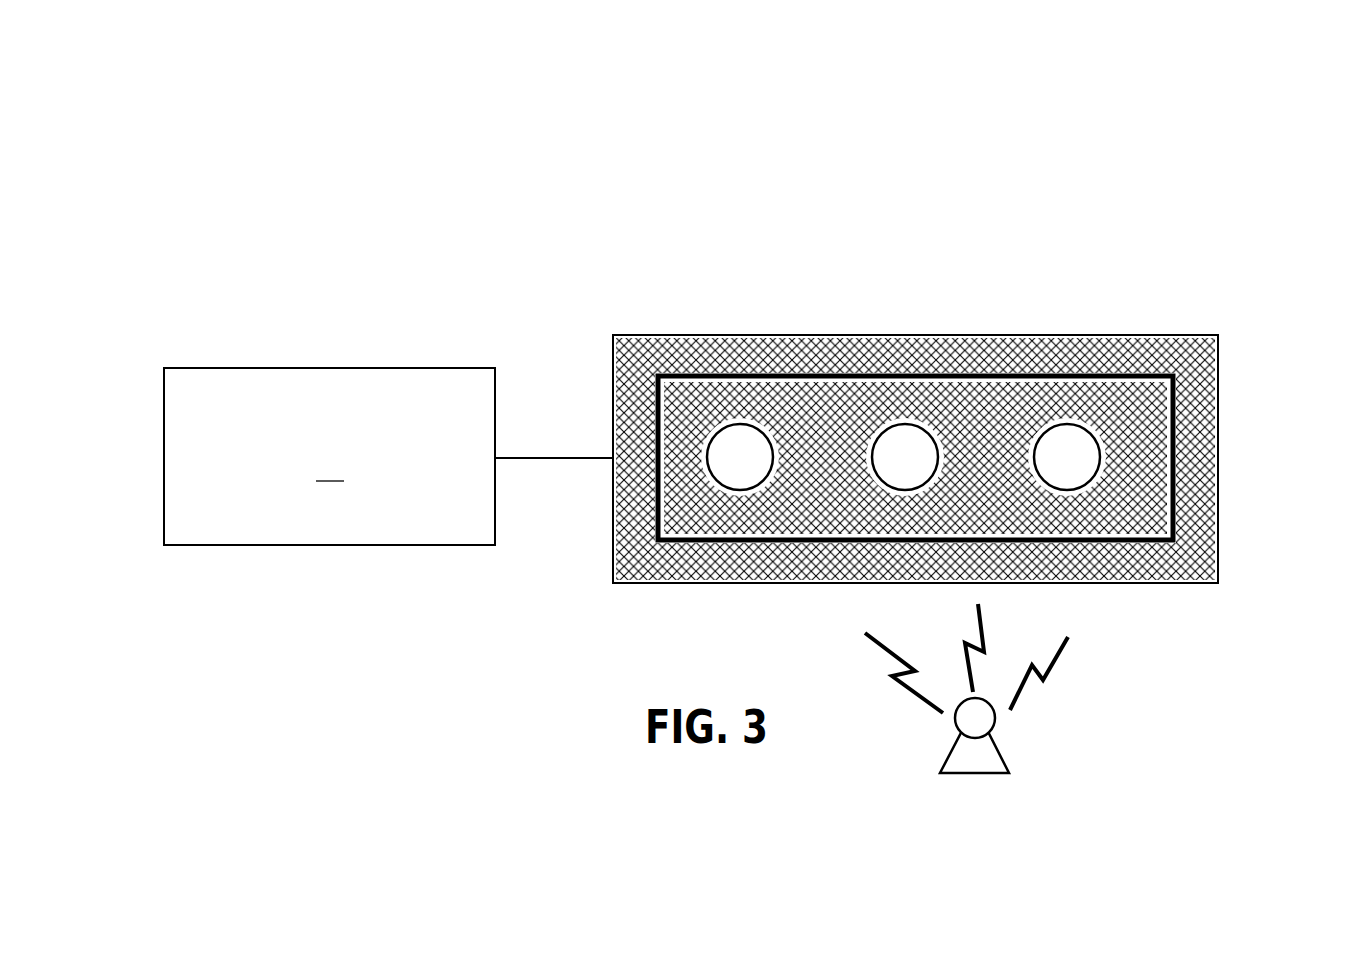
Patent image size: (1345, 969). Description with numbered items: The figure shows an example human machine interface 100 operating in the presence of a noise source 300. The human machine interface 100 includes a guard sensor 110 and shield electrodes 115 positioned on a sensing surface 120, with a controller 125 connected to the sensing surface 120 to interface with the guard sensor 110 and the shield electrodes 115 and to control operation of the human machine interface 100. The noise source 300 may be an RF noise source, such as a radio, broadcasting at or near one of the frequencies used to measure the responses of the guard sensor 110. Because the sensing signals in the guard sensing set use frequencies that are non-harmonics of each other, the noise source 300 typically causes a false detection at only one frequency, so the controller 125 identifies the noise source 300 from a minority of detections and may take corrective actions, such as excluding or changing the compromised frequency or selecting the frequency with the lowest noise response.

The human machine interface 100 is at (138, 103).
The guard sensor 110 is at (657, 382).
The shield electrodes 115 is at (1198, 418).
The sensing surface 120 is at (643, 335).
The controller 125 is at (329, 456).
The noise source 300 is at (980, 718).